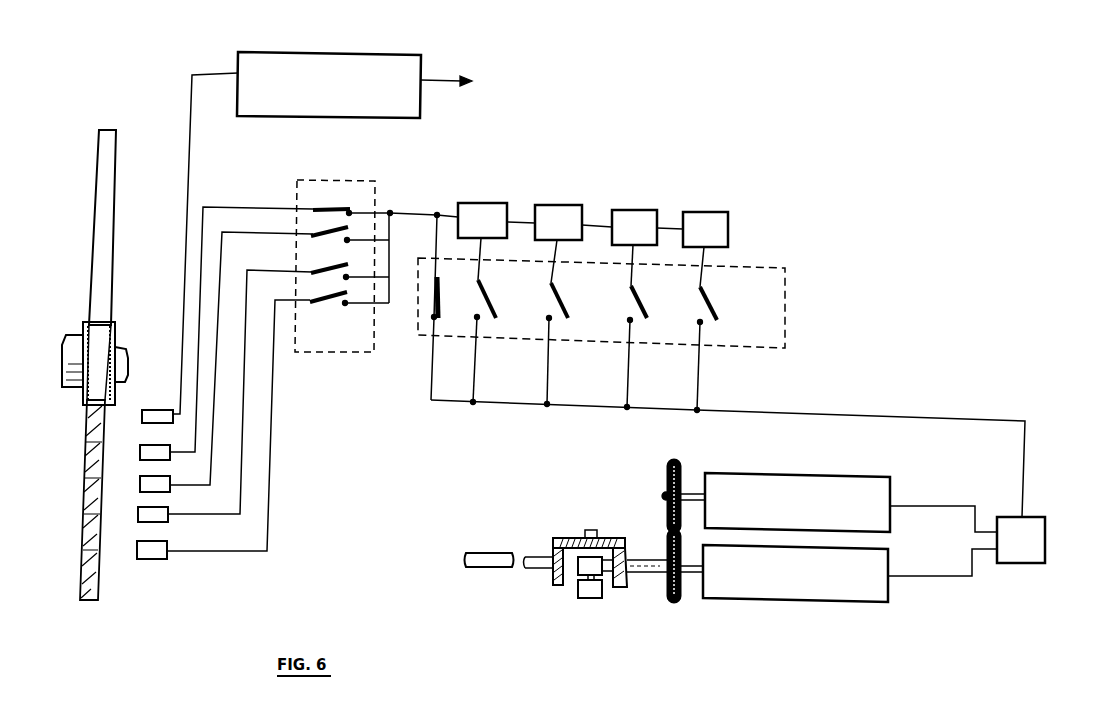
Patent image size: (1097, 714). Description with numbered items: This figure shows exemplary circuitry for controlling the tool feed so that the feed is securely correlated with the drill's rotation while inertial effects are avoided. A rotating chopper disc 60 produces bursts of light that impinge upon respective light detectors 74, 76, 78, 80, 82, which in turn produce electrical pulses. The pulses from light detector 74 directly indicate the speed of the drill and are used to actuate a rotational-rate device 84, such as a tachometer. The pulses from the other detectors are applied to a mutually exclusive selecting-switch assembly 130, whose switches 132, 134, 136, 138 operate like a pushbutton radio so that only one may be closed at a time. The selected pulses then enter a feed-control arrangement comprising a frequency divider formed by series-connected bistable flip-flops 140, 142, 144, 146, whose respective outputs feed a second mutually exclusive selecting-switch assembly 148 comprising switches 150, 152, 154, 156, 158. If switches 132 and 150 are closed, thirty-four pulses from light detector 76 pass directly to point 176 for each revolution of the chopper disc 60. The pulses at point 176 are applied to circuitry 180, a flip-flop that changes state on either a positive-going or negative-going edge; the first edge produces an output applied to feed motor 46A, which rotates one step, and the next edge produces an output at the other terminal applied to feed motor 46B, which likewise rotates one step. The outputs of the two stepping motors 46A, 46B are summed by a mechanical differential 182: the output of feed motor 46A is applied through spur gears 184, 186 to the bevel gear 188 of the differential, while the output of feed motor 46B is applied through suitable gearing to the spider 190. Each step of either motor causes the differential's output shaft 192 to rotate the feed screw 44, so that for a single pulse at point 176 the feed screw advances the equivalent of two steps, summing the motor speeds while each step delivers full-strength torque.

The feed screw 44 is at (500, 555).
The feed motor 46A is at (806, 477).
The feed motor 46B is at (805, 593).
The chopper disc 60 is at (101, 205).
The light detector 74 is at (153, 410).
The light detector 76 is at (149, 446).
The light detector 78 is at (147, 477).
The light detector 80 is at (146, 508).
The light detector 82 is at (145, 541).
The rotational-rate device 84 is at (338, 53).
The selecting-switch assembly 130 is at (312, 178).
The switch 132 is at (328, 208).
The switch 134 is at (312, 232).
The switch 136 is at (331, 268).
The switch 138 is at (321, 300).
The flip-flop 140 is at (478, 203).
The flip-flop 142 is at (553, 205).
The flip-flop 144 is at (633, 210).
The flip-flop 146 is at (705, 212).
The selecting-switch assembly 148 is at (422, 258).
The switch 150 is at (442, 300).
The switch 152 is at (494, 300).
The switch 154 is at (568, 302).
The switch 156 is at (650, 305).
The switch 158 is at (720, 307).
The point 176 is at (700, 410).
The circuitry 180 is at (1025, 522).
The mechanical differential 182 is at (587, 522).
The spur gear 184 is at (668, 480).
The spur gear 186 is at (669, 602).
The bevel gear 188 is at (617, 582).
The spider 190 is at (583, 566).
The output shaft 192 is at (541, 556).